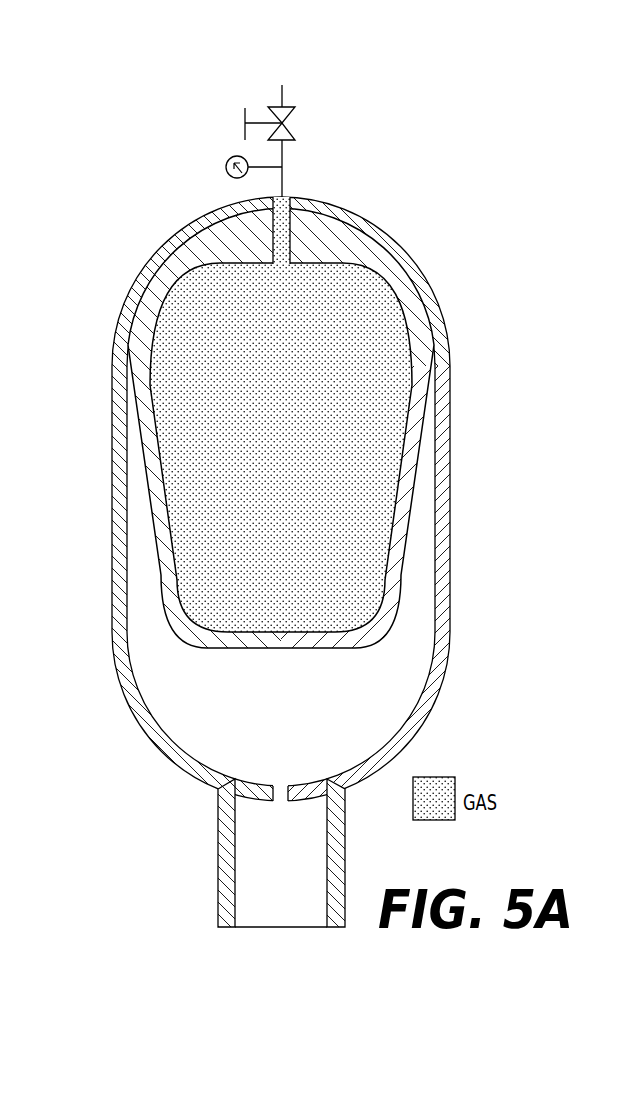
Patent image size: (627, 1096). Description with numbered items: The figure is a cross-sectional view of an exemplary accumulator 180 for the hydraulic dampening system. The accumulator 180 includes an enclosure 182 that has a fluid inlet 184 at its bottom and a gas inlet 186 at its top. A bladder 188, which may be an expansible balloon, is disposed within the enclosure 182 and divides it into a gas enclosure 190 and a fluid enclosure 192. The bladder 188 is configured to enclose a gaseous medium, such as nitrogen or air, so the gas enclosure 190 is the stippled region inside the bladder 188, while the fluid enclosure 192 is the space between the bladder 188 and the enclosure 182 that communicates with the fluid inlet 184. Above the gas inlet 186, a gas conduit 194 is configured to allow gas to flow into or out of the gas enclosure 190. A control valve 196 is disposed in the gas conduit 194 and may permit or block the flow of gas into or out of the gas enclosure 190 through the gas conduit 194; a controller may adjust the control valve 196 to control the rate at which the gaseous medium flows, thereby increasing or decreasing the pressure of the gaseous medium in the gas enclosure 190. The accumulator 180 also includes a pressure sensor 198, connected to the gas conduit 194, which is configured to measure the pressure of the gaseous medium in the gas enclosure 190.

The accumulator 180 is at (256, 542).
The enclosure 182 is at (450, 458).
The fluid inlet 184 is at (283, 900).
The gas inlet 186 is at (286, 206).
The bladder 188 is at (397, 552).
The gas enclosure 190 is at (297, 515).
The fluid enclosure 192 is at (296, 742).
The gas conduit 194 is at (283, 93).
The control valve 196 is at (288, 128).
The pressure sensor 198 is at (225, 169).